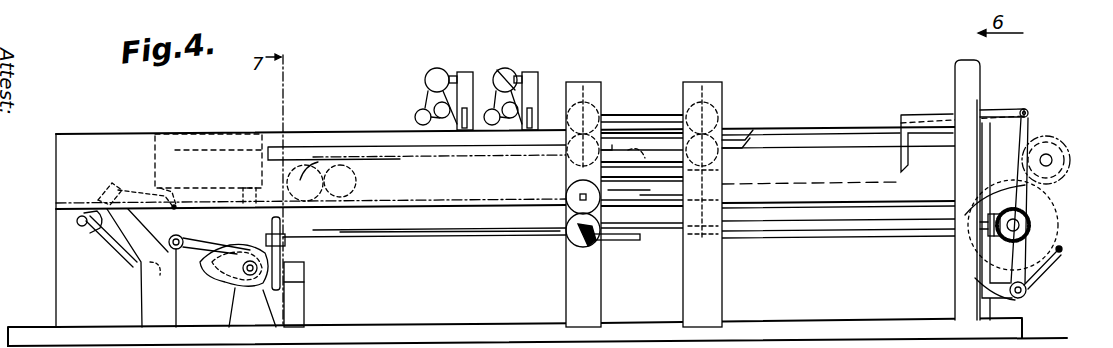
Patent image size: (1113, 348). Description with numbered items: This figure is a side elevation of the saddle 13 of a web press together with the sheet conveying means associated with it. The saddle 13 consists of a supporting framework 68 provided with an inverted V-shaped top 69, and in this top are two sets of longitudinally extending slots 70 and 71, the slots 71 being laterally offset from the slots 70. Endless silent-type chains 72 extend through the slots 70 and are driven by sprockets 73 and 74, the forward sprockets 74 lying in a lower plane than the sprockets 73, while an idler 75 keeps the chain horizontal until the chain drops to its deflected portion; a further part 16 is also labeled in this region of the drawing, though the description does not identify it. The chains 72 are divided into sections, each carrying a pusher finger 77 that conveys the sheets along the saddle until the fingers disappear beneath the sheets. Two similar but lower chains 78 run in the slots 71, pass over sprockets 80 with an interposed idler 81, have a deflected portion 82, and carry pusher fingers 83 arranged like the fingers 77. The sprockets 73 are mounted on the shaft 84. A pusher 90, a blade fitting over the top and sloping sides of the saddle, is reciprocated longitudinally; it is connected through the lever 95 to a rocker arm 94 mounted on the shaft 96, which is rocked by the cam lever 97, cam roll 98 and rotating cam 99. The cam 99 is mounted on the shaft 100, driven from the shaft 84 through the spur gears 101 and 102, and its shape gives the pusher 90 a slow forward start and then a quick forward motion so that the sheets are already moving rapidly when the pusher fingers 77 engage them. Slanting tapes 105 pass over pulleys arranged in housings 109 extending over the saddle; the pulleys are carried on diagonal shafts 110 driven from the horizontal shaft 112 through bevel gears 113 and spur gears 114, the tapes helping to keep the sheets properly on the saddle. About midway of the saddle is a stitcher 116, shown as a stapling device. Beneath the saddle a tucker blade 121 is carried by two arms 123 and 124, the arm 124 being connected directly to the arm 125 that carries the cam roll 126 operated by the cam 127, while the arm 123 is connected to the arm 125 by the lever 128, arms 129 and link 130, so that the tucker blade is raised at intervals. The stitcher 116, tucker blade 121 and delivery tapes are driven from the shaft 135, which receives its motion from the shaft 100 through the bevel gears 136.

The saddle 13 is at (830, 264).
The bar 16 is at (606, 152).
The supporting framework 68 is at (975, 285).
The inverted V-shaped top 69 is at (798, 136).
The slots 70 is at (837, 147).
The slots 71 is at (392, 152).
The chains 72 is at (832, 185).
The sprockets 73 is at (1044, 150).
The forward sprockets 74 is at (568, 158).
The idler 75 is at (645, 160).
The pusher finger 77 is at (752, 133).
The chains 78 is at (522, 153).
The sprockets 80 is at (287, 170).
The idler 81 is at (341, 158).
The deflected portion 82 is at (315, 161).
The pusher fingers 83 is at (428, 208).
The shaft 84 is at (1048, 156).
The pusher 90 is at (912, 118).
The rocker arm 94 is at (1022, 186).
The lever 95 is at (982, 190).
The shaft 96 is at (1024, 296).
The cam lever 97 is at (1048, 278).
The cam roll 98 is at (1062, 252).
The rotating cam 99 is at (1062, 210).
The shaft 100 is at (992, 232).
The spur gear 101 is at (983, 296).
The spur gear 102 is at (1062, 162).
The tapes 105 is at (624, 155).
The housings 109 is at (588, 81).
The transversely extending shafts 110 is at (583, 197).
The horizontal shaft 112 is at (631, 242).
The bevel gears 113 is at (586, 238).
The spur gears 114 is at (596, 215).
The stitcher 116 is at (500, 90).
The tucker blade 121 is at (158, 148).
The arm 123 is at (184, 195).
The arm 124 is at (250, 202).
The arm 125 is at (205, 240).
The cam roll 126 is at (251, 252).
The cam 127 is at (235, 281).
The lever 128 is at (129, 194).
The arms 129 is at (100, 228).
The link 130 is at (118, 252).
The shaft 135 is at (493, 240).
The bevel gears 136 is at (980, 200).